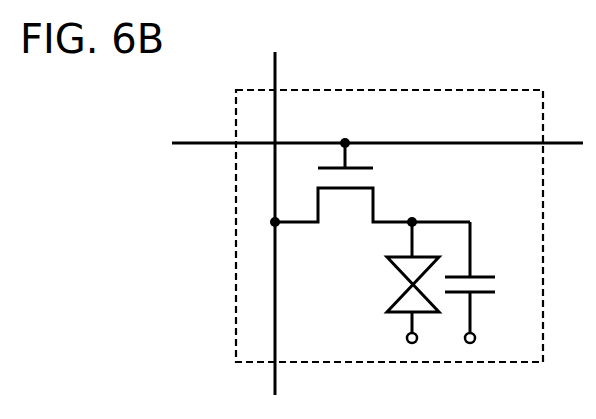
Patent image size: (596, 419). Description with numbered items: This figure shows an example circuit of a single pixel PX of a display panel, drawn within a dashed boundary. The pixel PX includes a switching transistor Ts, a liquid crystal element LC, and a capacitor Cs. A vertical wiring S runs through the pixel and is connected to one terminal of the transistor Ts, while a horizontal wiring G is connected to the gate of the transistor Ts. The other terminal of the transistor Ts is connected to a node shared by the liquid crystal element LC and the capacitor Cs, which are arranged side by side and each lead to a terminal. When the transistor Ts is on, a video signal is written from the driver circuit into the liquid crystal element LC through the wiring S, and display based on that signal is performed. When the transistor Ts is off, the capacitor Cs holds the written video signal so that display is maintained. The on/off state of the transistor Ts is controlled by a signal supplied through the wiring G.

The pixel PX is at (389, 210).
The wiring S is at (289, 223).
The wiring G is at (377, 163).
The switching transistor Ts is at (370, 192).
The liquid crystal element LC is at (396, 282).
The capacitor Cs is at (490, 282).